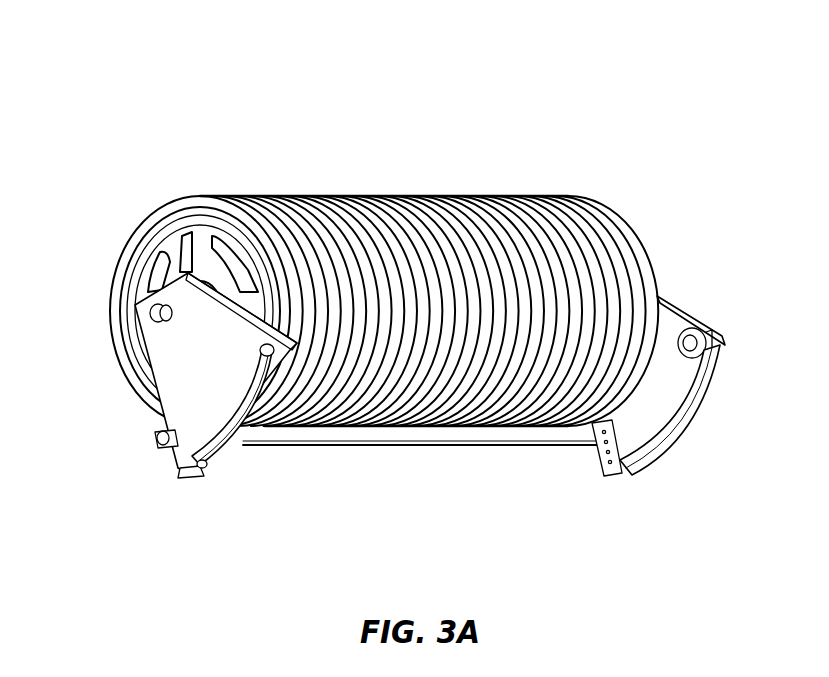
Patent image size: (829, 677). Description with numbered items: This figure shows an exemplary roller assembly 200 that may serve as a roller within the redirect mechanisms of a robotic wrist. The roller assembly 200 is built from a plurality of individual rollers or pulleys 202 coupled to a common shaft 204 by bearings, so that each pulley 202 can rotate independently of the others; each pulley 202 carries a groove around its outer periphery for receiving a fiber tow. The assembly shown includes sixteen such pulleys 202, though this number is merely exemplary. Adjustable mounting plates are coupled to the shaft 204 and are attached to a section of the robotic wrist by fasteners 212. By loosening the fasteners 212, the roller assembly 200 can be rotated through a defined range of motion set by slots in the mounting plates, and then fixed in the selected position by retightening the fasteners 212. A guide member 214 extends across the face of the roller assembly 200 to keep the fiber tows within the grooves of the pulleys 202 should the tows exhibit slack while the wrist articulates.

The roller assembly 200 is at (415, 278).
The pulley 202 is at (368, 195).
The shaft 204 is at (150, 318).
The fastener 212 is at (710, 352).
The guide member 214 is at (390, 435).